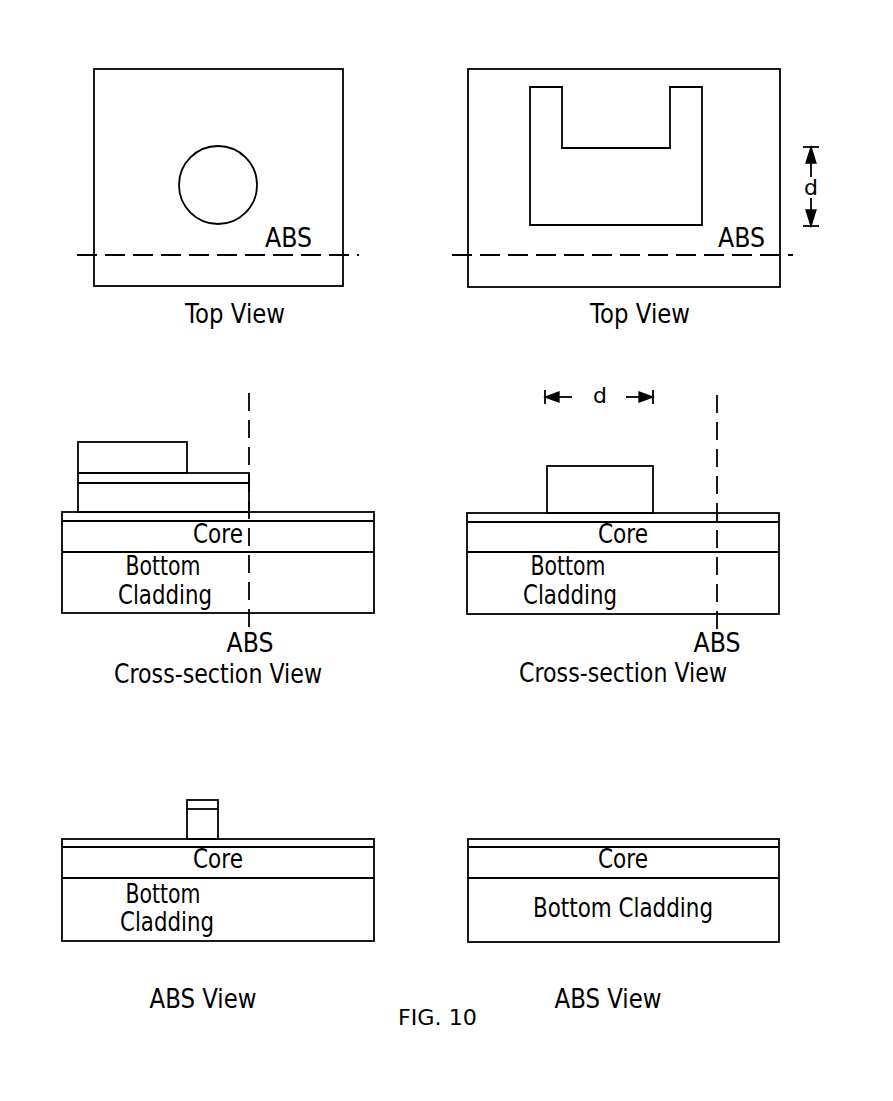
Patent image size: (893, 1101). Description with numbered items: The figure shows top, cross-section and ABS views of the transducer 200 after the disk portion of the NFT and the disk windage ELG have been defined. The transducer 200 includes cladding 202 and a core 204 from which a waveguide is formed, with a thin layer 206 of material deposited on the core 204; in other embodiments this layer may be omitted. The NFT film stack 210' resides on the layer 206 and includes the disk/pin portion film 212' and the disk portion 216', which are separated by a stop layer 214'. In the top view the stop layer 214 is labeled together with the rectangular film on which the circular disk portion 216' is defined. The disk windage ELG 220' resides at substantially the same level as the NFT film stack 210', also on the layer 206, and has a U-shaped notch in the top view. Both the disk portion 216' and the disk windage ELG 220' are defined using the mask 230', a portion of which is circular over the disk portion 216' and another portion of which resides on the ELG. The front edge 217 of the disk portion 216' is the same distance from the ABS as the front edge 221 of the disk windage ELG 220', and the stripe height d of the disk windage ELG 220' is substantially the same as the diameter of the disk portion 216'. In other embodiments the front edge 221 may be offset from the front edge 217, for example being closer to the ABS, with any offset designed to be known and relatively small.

The transducer 200 is at (456, 32).
The cladding 202 is at (467, 595).
The core 204 is at (467, 535).
The thin layer 206 is at (62, 515).
The NFT film stack 210' is at (228, 490).
The disk/pin portion film 212' is at (136, 673).
The stop layer 214' is at (188, 612).
The disk portion 216' is at (145, 425).
The front edge of the disk portion 217 is at (212, 234).
The disk windage ELG 220' is at (601, 432).
The front edge of the disk windage ELG 221 is at (541, 236).
The mask 230' is at (153, 118).
The stop layer 214 is at (218, 155).